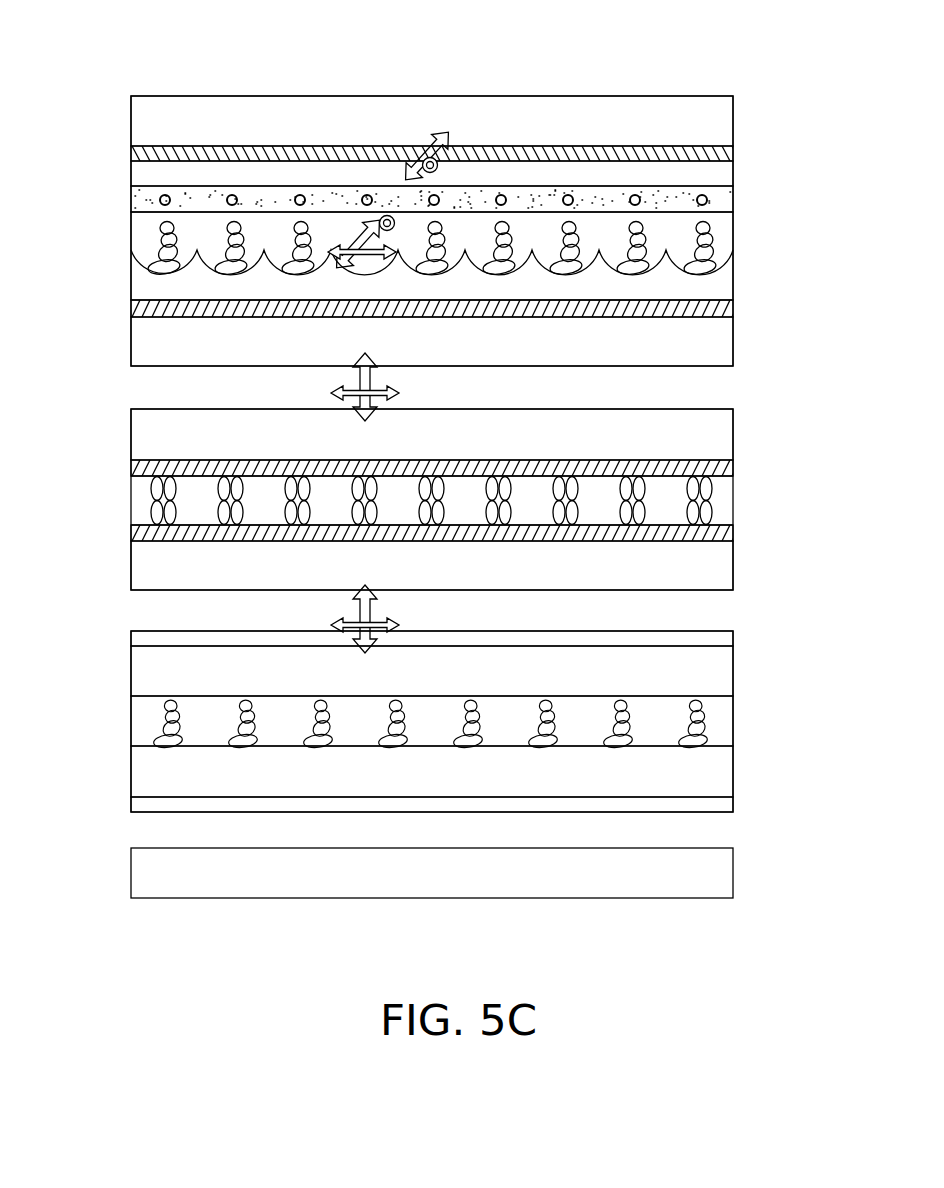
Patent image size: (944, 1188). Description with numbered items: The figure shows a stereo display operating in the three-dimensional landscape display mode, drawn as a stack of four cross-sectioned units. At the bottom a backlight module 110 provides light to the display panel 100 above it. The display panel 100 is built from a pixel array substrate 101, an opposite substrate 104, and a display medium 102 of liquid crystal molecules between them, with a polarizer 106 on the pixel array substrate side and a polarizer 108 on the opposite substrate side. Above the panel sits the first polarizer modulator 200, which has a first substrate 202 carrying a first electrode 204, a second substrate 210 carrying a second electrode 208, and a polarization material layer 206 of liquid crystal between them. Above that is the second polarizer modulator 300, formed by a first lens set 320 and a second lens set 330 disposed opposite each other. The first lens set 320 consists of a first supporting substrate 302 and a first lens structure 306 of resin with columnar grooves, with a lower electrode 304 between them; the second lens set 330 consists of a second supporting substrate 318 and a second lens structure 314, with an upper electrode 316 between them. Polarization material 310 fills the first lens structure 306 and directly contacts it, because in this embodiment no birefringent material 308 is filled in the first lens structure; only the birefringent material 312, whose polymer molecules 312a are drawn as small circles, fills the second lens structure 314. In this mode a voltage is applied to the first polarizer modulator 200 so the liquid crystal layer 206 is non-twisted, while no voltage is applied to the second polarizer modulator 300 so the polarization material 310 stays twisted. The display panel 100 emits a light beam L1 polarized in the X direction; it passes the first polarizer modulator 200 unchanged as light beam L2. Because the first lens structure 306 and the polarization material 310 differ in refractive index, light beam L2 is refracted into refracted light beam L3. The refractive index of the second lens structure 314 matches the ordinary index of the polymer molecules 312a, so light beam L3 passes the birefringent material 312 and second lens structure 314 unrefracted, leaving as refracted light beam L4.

The display panel 100 is at (499, 727).
The pixel array substrate 101 is at (733, 770).
The display medium 102 is at (733, 720).
The opposite substrate 104 is at (733, 670).
The polarizer 106 is at (470, 809).
The polarizer 108 is at (733, 640).
The backlight module 110 is at (733, 877).
The first polarizer modulator 200 is at (499, 500).
The first substrate 202 is at (470, 565).
The first electrode 204 is at (733, 532).
The polarization material layer 206 is at (733, 499).
The second electrode 208 is at (733, 467).
The second substrate 210 is at (733, 434).
The second polarizer modulator 300 is at (454, 231).
The first supporting substrate 302 is at (733, 342).
The lower electrode 304 is at (733, 310).
The first lens structure 306 is at (733, 286).
The birefringent material 308 is at (718, 258).
The polarization material 310 is at (733, 228).
The birefringent material 312 is at (733, 203).
The polymer molecules 312a is at (160, 200).
The second lens structure 314 is at (733, 176).
The upper electrode 316 is at (733, 152).
The second supporting substrate 318 is at (733, 107).
The first lens set 320 is at (131, 287).
The second lens set 330 is at (131, 129).
The light beam L1 is at (333, 625).
The light beam L2 is at (333, 393).
The refracted light beam L3 is at (365, 232).
The refracted light beam L4 is at (441, 128).